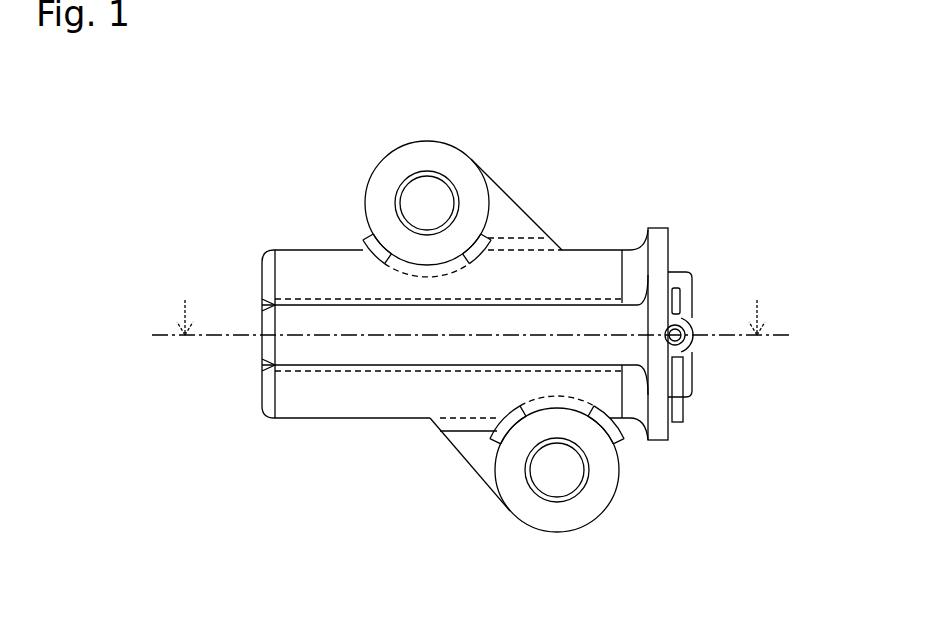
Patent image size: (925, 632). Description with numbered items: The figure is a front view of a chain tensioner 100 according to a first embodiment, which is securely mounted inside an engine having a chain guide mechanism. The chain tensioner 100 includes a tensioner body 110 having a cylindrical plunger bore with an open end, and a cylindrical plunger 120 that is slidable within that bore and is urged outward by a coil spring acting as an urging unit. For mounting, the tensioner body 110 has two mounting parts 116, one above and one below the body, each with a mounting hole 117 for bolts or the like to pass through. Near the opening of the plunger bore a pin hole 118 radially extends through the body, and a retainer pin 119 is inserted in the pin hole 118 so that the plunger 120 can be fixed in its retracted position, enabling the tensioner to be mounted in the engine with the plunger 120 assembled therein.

The chain tensioner 100 is at (197, 163).
The tensioner body 110 is at (380, 387).
The mounting parts 116 is at (425, 157).
The mounting holes 117 is at (424, 202).
The pin hole 118 is at (692, 340).
The retainer pin 119 is at (683, 397).
The plunger 120 is at (693, 288).